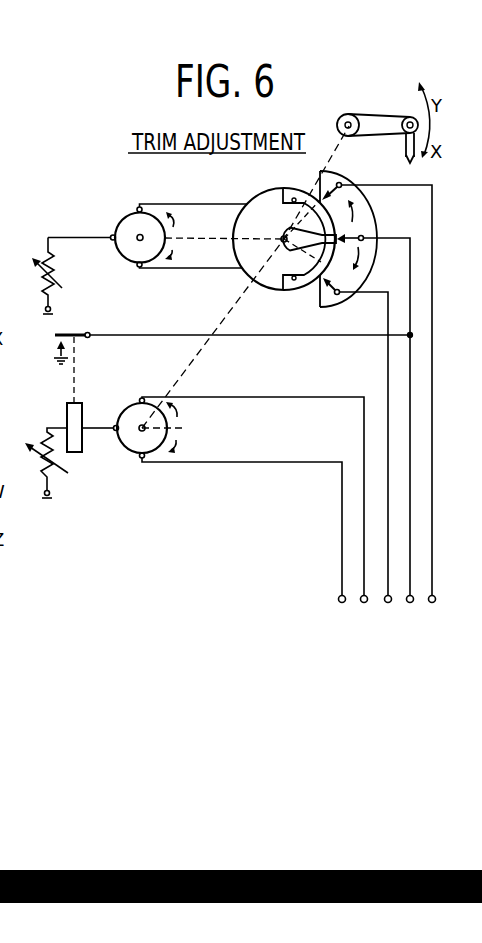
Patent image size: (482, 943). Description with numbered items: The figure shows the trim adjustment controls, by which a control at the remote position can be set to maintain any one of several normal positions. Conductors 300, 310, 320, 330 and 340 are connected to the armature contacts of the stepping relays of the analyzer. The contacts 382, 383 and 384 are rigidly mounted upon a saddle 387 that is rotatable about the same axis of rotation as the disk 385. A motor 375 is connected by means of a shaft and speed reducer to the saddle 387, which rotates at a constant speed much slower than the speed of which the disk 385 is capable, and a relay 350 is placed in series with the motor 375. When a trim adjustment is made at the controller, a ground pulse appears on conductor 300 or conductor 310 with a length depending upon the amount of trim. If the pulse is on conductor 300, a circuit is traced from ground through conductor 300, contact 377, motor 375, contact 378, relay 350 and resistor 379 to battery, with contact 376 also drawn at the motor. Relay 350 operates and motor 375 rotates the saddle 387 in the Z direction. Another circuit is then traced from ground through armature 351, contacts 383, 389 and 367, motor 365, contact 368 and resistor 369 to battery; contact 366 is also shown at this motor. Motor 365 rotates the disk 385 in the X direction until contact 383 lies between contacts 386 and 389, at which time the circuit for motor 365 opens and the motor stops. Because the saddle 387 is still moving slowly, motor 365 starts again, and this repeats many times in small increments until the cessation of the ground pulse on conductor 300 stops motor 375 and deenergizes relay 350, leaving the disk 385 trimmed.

The conductor 300 is at (342, 513).
The conductor 310 is at (364, 526).
The conductor 320 is at (388, 503).
The conductor 330 is at (410, 529).
The conductor 340 is at (432, 550).
The relay 350 is at (67, 406).
The armature 351 is at (76, 333).
The motor 365 is at (120, 218).
The contact 366 is at (152, 196).
The contact 367 is at (136, 268).
The contact 368 is at (111, 233).
The resistor 369 is at (40, 274).
The motor 375 is at (130, 448).
The contact 376 is at (139, 399).
The contact 377 is at (139, 460).
The contact 378 is at (113, 432).
The resistor 379 is at (34, 458).
The contact 382 is at (318, 191).
The contact 383 is at (366, 236).
The contact 384 is at (322, 292).
The disk 385 is at (250, 202).
The contact 386 is at (307, 208).
The saddle 387 is at (352, 174).
The contact 389 is at (301, 240).